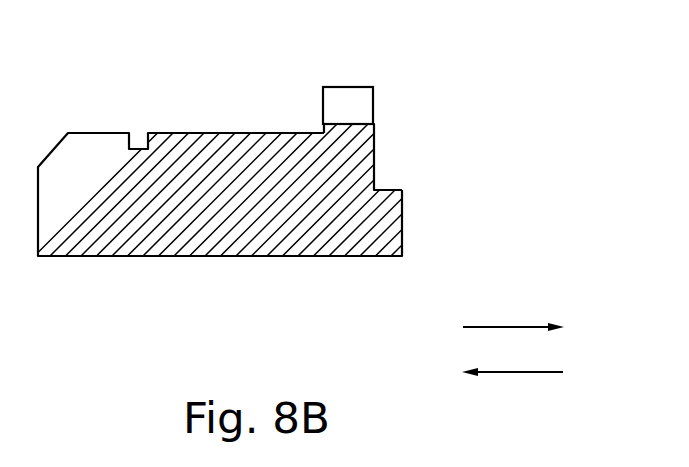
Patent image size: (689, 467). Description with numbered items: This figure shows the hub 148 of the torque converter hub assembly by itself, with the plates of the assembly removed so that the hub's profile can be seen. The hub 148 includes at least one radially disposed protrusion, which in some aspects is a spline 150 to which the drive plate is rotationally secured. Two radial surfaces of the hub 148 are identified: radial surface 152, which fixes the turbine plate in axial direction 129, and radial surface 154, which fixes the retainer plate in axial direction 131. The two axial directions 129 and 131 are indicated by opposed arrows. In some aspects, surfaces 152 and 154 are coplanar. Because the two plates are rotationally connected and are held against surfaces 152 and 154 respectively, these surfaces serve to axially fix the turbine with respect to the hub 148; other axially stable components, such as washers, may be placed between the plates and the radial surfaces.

The hub 148 is at (83, 230).
The spline 150 is at (349, 98).
The radial surface 152 is at (374, 143).
The radial surface 154 is at (323, 116).
The axial direction 131 is at (502, 327).
The axial direction 129 is at (528, 372).